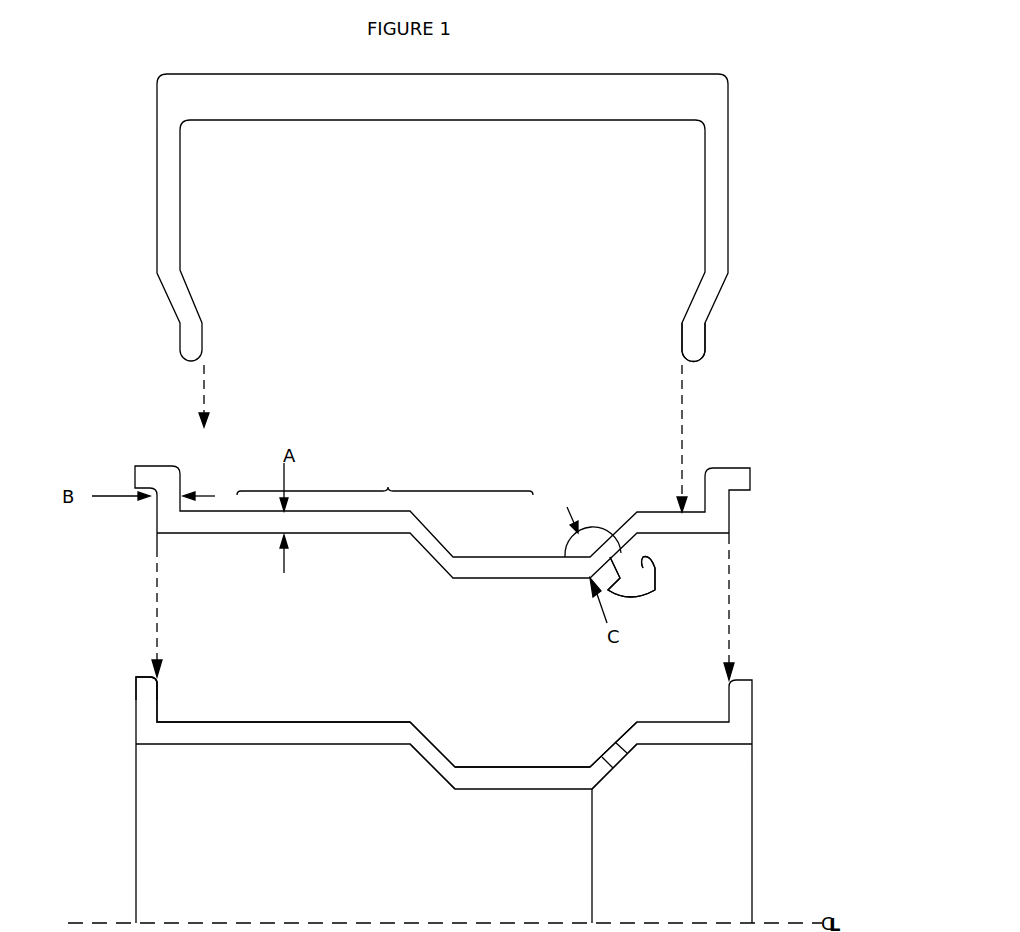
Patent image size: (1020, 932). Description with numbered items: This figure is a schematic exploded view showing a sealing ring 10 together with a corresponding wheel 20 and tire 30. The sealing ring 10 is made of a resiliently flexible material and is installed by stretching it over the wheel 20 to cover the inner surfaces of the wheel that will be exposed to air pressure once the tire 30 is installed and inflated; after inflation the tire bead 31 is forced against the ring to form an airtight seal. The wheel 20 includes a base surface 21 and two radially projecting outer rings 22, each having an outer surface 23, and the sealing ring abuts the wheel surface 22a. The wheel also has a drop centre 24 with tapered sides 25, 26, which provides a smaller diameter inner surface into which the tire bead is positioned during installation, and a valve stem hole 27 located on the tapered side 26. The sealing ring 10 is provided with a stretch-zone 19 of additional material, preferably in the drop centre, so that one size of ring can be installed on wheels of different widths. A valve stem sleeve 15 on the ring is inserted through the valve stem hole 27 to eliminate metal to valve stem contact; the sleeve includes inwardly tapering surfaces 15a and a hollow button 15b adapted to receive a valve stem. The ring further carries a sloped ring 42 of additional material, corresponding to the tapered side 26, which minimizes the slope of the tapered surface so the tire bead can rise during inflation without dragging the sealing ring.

The tire 30 is at (493, 218).
The tire bead 31 is at (705, 337).
The sealing ring 10 is at (717, 468).
The stretch-zone 19 is at (385, 477).
The sloped ring 42 is at (588, 528).
The valve stem sleeve 15 is at (653, 593).
The inwardly tapering surfaces 15a is at (628, 572).
The hollow button 15b is at (647, 562).
The wheel 20 is at (753, 698).
The outer surface 23 is at (157, 677).
The wheel surface 22a is at (160, 685).
The radially projecting outer rings 22 is at (160, 708).
The base surface 21 is at (333, 720).
The tapered side 25 is at (433, 743).
The drop centre 24 is at (515, 767).
The tapered side 26 is at (625, 732).
The valve stem hole 27 is at (627, 753).